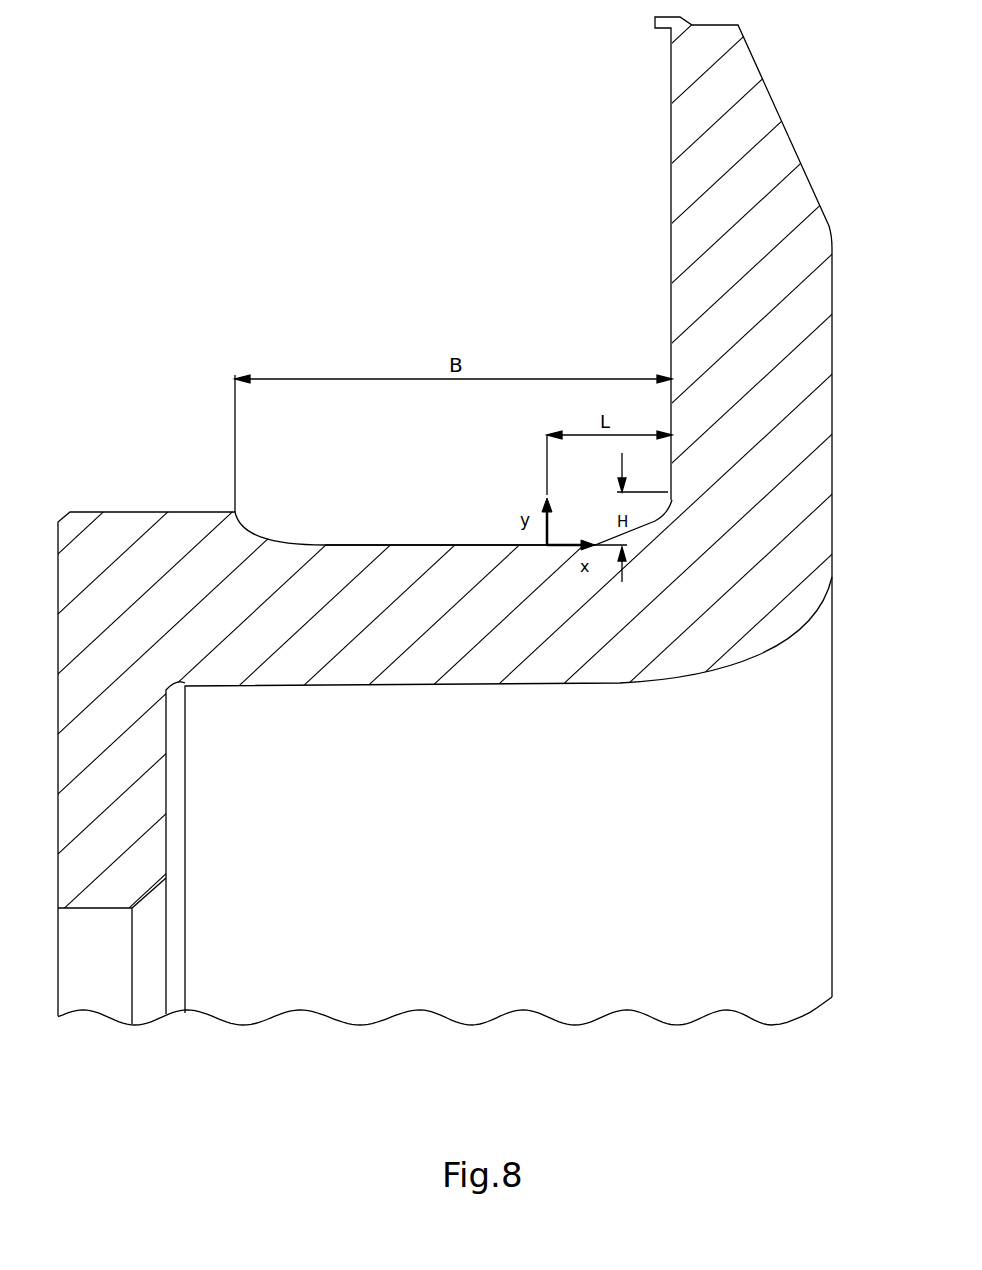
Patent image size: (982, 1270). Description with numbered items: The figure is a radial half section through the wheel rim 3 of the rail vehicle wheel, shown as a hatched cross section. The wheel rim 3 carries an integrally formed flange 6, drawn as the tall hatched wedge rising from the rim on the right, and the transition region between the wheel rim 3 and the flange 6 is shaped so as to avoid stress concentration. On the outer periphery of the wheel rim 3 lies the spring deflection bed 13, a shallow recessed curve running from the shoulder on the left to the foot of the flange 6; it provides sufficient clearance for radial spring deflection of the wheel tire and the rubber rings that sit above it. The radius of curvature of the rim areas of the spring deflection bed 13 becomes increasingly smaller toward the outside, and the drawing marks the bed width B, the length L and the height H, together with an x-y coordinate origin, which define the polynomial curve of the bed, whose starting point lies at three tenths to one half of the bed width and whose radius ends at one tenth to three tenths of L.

The wheel rim 3 is at (717, 628).
The integrally formed flange 6 is at (780, 390).
The spring deflection bed 13 is at (405, 545).